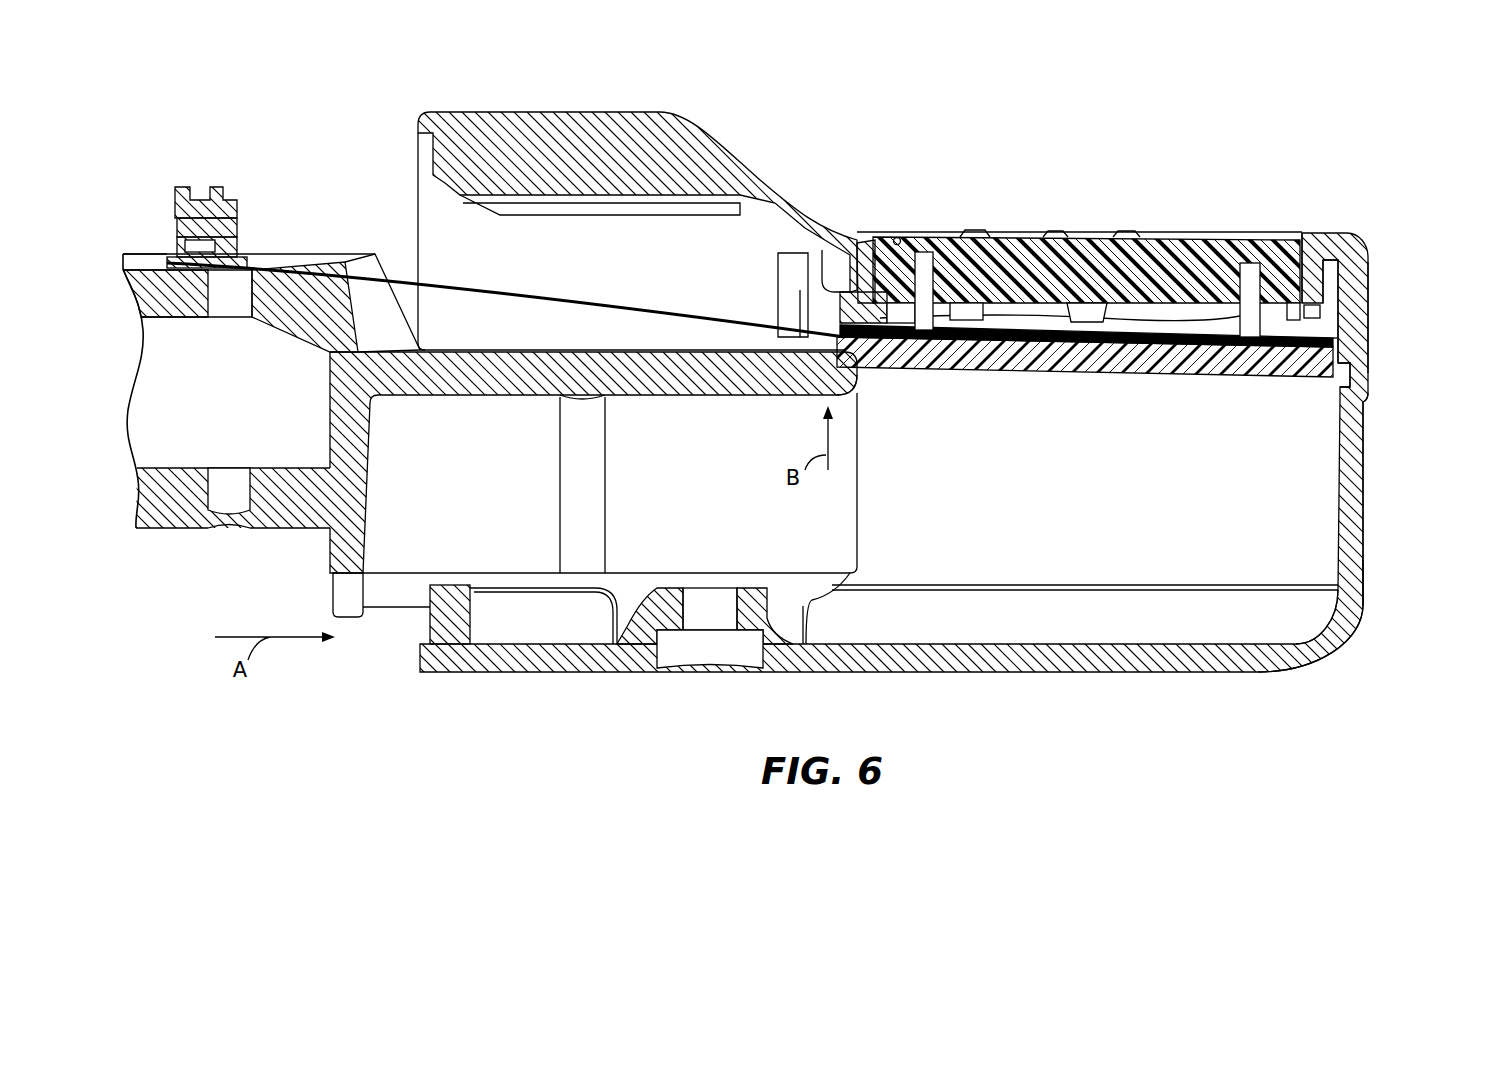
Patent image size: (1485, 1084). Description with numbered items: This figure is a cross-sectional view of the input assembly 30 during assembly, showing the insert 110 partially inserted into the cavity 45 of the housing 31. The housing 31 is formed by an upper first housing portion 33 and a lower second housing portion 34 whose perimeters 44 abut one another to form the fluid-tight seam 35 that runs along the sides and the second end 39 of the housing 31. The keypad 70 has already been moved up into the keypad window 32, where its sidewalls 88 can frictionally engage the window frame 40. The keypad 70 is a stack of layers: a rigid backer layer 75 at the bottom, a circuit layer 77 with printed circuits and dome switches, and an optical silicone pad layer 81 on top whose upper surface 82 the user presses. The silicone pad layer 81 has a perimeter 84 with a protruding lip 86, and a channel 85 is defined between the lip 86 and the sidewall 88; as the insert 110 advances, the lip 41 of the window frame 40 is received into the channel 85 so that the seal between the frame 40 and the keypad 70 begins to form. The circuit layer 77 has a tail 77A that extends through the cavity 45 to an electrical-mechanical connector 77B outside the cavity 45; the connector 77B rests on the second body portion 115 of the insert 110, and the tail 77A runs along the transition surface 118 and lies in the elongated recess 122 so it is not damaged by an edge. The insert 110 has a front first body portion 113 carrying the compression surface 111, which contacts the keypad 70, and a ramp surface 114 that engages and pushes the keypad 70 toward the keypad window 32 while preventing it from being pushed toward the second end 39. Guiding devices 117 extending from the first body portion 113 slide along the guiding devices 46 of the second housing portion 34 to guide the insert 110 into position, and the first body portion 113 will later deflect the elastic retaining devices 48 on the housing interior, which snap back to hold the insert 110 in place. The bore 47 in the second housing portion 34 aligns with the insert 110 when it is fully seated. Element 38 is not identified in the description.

The input assembly 30 is at (914, 378).
The housing 31 is at (1417, 475).
The keypad window 32 is at (1079, 192).
The first housing portion 33 is at (1355, 240).
The second housing portion 34 is at (1353, 610).
The seam 35 is at (1368, 397).
The upper block 38 is at (596, 231).
The second end 39 is at (1406, 310).
The window frame 40 is at (1314, 240).
The lip 41 is at (1332, 262).
The perimeter 44 is at (1370, 378).
The cavity 45 is at (1085, 638).
The guiding device 46 is at (1262, 607).
The bore 47 is at (705, 663).
The retaining device 48 is at (787, 258).
The keypad 70 is at (1073, 428).
The backer layer 75 is at (1264, 358).
The circuit layer 77 is at (838, 320).
The tail 77A is at (582, 307).
The electrical-mechanical connector 77B is at (200, 195).
The optical silicone pad layer 81 is at (973, 270).
The upper surface 82 is at (1092, 237).
The perimeter 84 is at (830, 282).
The channel 85 is at (1370, 264).
The lip 86 is at (1336, 340).
The sidewall 88 is at (858, 240).
The insert 110 is at (236, 431).
The compression surface 111 is at (510, 352).
The first body portion 113 is at (875, 518).
The ramp surface 114 is at (865, 365).
The second body portion 115 is at (200, 545).
The guiding device 117 is at (390, 595).
The transition surface 118 is at (322, 302).
The elongated recess 122 is at (132, 223).